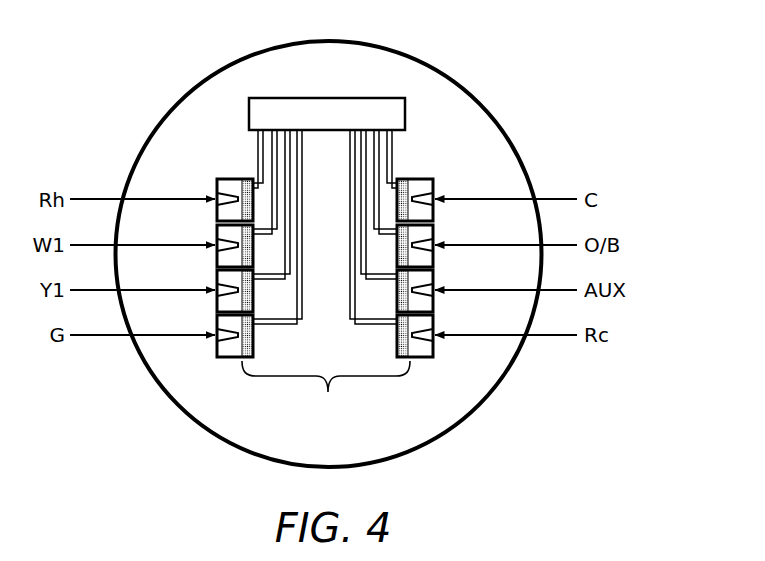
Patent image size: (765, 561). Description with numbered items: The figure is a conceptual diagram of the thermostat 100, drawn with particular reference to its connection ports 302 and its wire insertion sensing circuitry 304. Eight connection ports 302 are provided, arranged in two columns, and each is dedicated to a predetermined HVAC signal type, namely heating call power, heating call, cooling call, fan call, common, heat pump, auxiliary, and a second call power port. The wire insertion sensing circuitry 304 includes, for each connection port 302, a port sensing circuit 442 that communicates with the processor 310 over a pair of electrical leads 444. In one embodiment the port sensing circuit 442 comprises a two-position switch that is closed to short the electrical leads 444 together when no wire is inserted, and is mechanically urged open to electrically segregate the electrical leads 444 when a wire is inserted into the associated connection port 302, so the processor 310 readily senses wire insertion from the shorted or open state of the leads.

The thermostat 100 is at (175, 100).
The processor 310 is at (332, 97).
The connection port 302 is at (228, 178).
The wire insertion sensing circuitry 304 is at (326, 391).
The port sensing circuit 442 is at (254, 343).
The electrical leads 444 is at (302, 326).